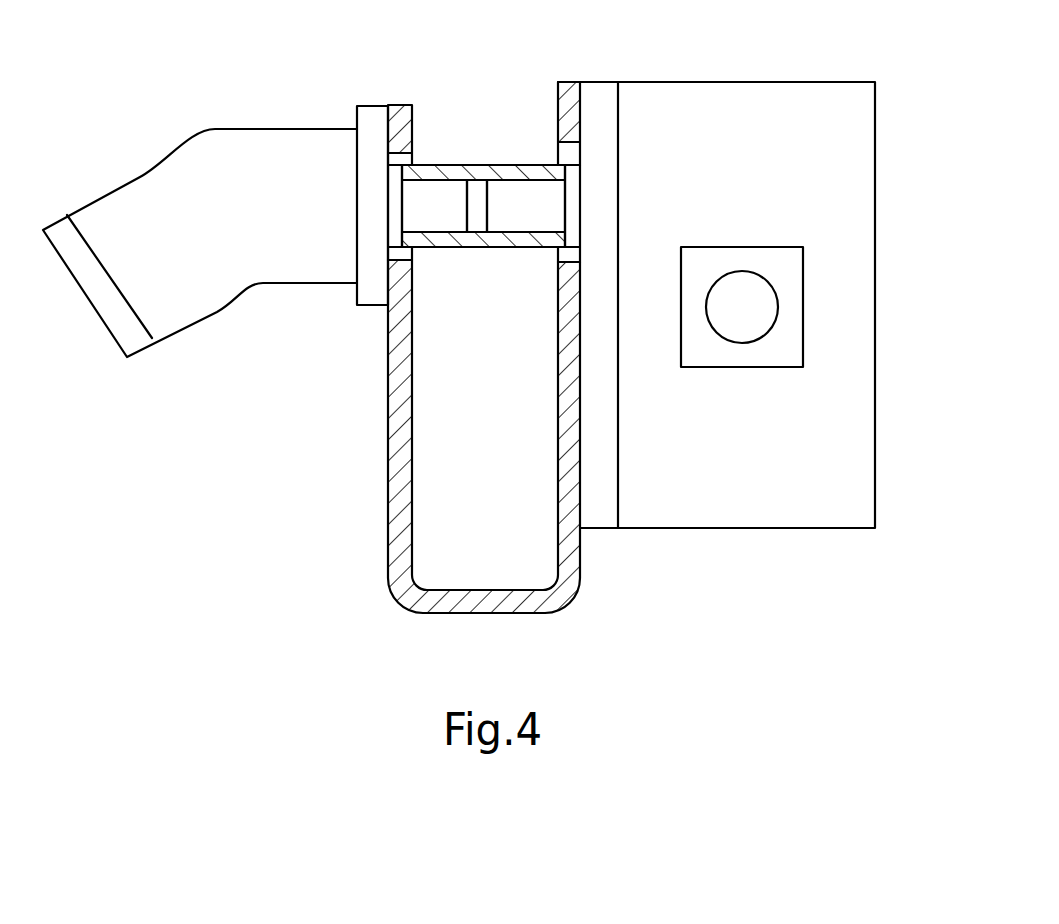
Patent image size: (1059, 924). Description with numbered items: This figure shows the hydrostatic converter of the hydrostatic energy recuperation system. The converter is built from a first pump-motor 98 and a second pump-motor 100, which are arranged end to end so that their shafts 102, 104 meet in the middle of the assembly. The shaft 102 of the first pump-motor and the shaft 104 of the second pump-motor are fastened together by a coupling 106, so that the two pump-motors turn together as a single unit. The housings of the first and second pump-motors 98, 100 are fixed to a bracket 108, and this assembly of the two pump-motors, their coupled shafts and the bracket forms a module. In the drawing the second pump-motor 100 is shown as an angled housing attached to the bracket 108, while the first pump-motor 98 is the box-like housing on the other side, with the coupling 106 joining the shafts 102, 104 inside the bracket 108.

The first pump-motor 98 is at (713, 122).
The second pump-motor 100 is at (285, 158).
The shaft of first pump-motor 102 is at (445, 198).
The shaft of second pump-motor 104 is at (517, 197).
The coupling 106 is at (475, 172).
The bracket 108 is at (389, 472).